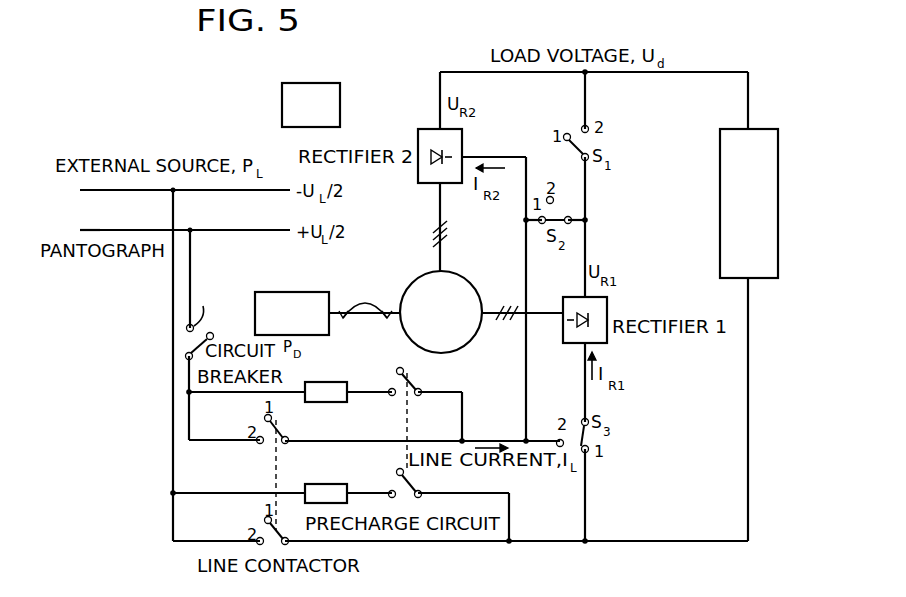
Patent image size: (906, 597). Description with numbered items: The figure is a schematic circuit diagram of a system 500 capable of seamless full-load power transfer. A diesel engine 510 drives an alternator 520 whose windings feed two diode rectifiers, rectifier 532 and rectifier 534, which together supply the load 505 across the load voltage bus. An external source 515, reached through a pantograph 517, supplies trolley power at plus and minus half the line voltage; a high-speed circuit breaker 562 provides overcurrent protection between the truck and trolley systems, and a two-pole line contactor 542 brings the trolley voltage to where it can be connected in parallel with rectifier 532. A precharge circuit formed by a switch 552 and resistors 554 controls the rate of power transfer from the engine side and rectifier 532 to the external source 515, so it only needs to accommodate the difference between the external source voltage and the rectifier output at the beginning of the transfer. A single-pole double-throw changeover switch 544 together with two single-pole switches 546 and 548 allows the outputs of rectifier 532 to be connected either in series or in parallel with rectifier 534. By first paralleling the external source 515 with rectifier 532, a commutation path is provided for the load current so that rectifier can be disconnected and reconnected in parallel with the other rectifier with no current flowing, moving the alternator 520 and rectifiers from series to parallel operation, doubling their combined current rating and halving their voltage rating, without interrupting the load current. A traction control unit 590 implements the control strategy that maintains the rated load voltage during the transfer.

The system 500 is at (134, 117).
The load 505 is at (757, 128).
The alternator 510 is at (292, 292).
The external power source 515 is at (152, 157).
The pantograph 517 is at (98, 268).
The alternator 520 is at (460, 282).
The rectifier 532 is at (607, 309).
The rectifier 534 is at (464, 151).
The line contactor 542 is at (265, 447).
The switch S3 544 is at (610, 443).
The switch S1 546 is at (603, 143).
The switch S2 548 is at (576, 210).
The precharge circuit switch 552 is at (396, 485).
The precharge resistor 554 is at (325, 382).
The circuit breaker 562 is at (213, 319).
The traction control unit (TCU) 590 is at (341, 103).